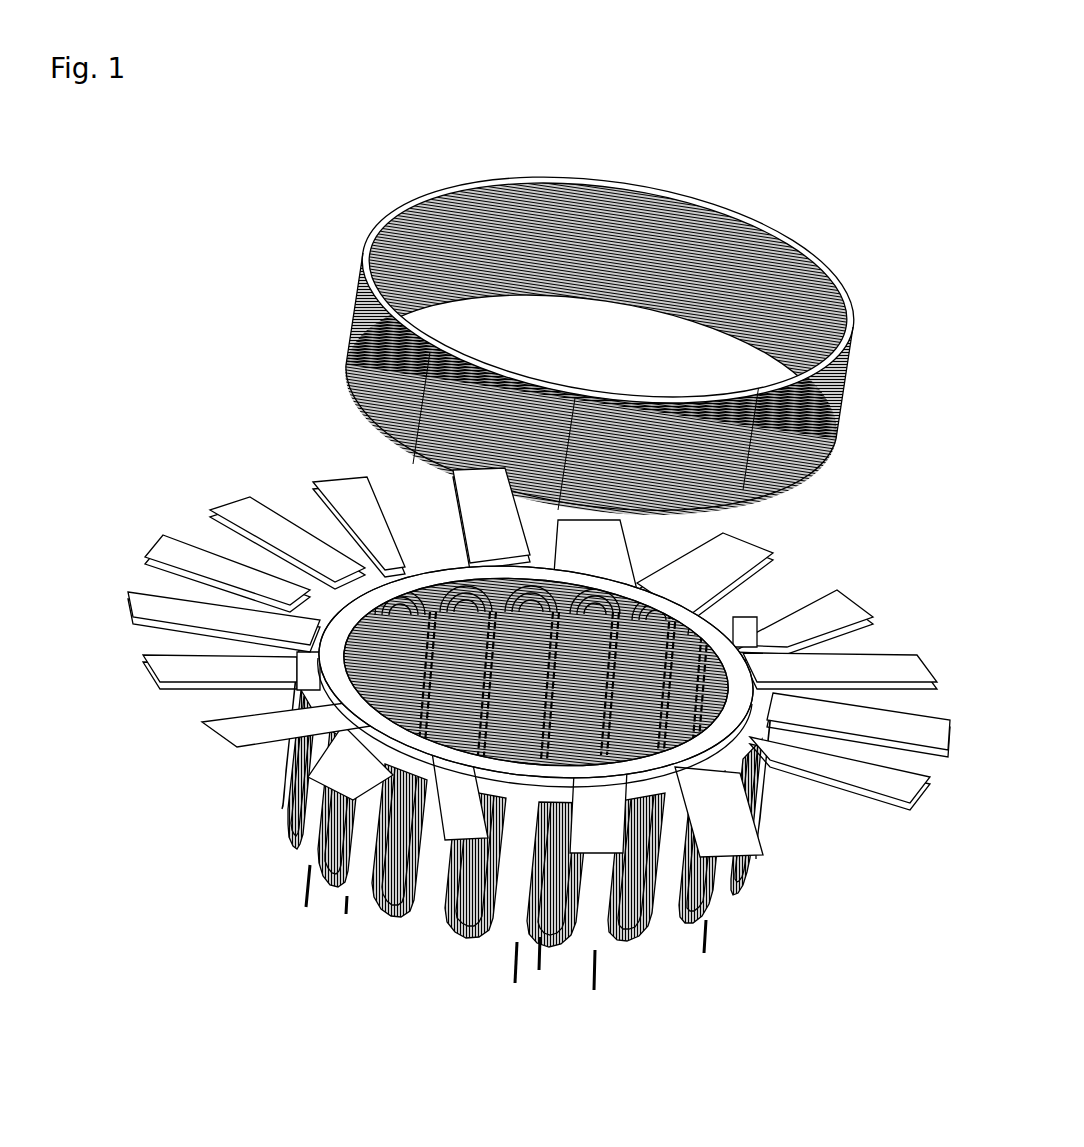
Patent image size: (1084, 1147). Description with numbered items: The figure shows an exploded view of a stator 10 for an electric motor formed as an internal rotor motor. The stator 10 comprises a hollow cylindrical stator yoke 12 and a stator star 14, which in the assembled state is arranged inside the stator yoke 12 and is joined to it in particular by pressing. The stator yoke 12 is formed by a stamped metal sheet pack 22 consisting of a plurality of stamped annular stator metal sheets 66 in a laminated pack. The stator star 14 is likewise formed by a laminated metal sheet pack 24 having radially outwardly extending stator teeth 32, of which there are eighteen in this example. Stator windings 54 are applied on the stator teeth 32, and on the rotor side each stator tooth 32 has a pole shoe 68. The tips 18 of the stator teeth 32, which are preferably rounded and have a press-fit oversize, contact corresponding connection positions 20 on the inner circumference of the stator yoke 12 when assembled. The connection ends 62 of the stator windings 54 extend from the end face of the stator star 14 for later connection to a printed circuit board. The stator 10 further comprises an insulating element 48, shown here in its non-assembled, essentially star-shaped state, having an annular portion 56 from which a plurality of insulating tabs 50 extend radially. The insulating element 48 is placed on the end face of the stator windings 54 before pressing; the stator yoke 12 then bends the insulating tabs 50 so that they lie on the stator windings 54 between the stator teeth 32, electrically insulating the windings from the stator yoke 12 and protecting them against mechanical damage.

The stator 10 is at (790, 178).
The stator yoke 12 is at (562, 170).
The stator star 14 is at (325, 921).
The tips of the stator teeth 18 is at (667, 917).
The connection positions 20 is at (702, 215).
The metal sheet pack of the stator yoke 22 is at (853, 455).
The metal sheet pack of the stator star 24 is at (380, 568).
The stator teeth 32 is at (585, 927).
The insulating element 48 is at (875, 603).
The insulating tabs 50 is at (178, 668).
The stator windings 54 is at (428, 930).
The annular portion 56 is at (277, 747).
The connection ends 62 is at (520, 985).
The stator metal sheets 66 is at (470, 183).
The pole shoe 68 is at (683, 620).